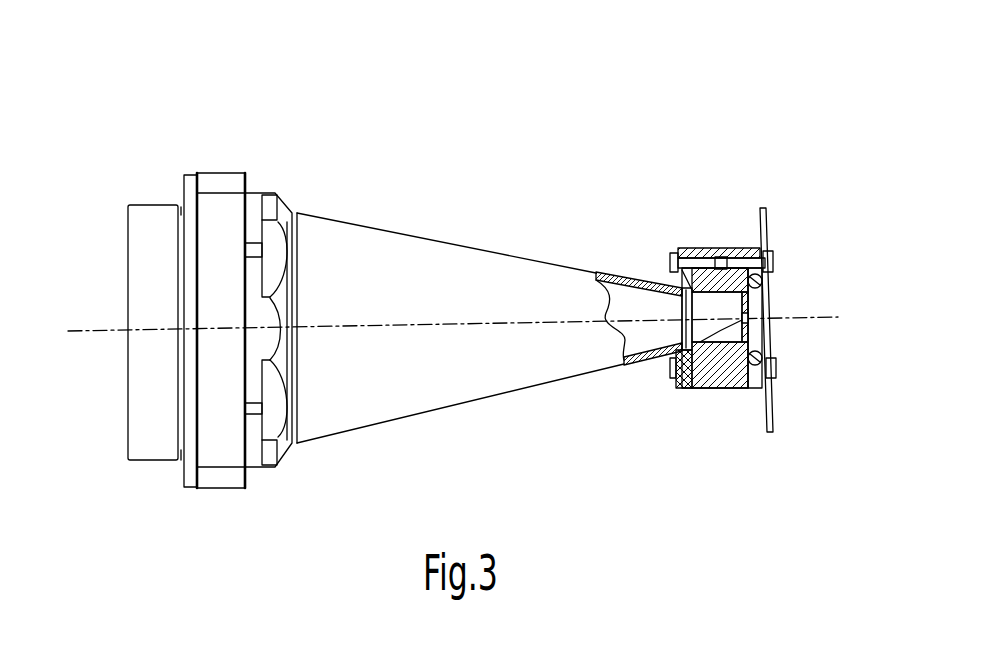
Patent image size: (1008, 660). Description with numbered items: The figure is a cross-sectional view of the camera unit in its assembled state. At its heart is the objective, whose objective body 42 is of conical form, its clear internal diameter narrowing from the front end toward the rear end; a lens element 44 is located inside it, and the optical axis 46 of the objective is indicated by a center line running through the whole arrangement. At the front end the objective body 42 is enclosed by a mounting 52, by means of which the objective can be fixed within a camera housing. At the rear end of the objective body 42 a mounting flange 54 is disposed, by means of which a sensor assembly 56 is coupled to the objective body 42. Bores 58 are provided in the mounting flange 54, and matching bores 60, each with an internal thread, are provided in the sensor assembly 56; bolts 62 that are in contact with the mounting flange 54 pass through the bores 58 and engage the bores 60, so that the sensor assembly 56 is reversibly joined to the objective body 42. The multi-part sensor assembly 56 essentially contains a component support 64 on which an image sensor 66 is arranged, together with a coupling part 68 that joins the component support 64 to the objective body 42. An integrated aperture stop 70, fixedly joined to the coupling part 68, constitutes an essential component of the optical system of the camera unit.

The objective body 42 is at (377, 243).
The lens element 44 is at (132, 283).
The optical axis 46 is at (805, 318).
The mounting 52 is at (217, 180).
The mounting flange 54 is at (682, 289).
The sensor assembly 56 is at (694, 409).
The bores 58 is at (673, 252).
The bores 60 is at (705, 246).
The bolts 62 is at (688, 263).
The component support 64 is at (766, 208).
The image sensor 66 is at (767, 300).
The coupling part 68 is at (720, 388).
The integrated aperture stop 70 is at (680, 388).